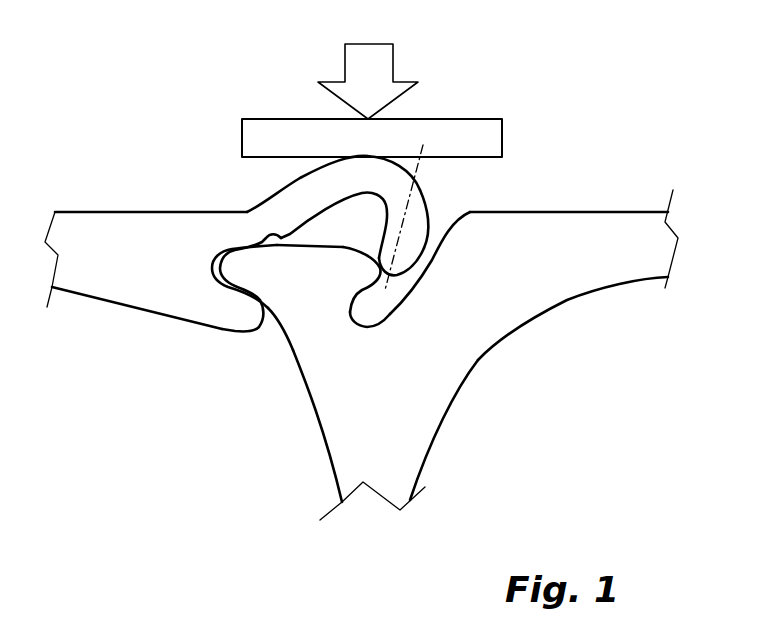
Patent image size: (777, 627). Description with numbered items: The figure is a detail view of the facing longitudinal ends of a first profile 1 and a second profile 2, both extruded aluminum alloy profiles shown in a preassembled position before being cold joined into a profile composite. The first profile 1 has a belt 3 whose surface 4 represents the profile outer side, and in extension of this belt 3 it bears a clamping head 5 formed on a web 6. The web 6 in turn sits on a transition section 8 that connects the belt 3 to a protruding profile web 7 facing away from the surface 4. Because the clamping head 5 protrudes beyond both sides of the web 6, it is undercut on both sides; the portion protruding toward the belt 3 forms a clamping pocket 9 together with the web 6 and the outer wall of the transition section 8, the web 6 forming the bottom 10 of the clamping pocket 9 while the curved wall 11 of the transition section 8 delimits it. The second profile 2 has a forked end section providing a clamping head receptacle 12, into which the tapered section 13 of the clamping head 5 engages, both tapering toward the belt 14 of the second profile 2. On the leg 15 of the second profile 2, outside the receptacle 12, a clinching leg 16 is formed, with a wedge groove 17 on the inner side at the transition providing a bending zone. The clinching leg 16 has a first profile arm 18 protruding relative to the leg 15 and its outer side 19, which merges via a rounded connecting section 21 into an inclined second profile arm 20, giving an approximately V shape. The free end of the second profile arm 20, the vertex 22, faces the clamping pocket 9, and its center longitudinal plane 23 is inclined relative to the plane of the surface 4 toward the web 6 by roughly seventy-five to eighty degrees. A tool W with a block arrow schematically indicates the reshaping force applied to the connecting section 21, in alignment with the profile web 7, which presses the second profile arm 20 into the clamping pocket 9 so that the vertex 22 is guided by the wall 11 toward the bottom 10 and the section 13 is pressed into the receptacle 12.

The first profile 1 is at (545, 178).
The second profile 2 is at (187, 192).
The belt 3 is at (640, 256).
The surface 4 is at (598, 212).
The clamping head 5 is at (299, 286).
The web 6 is at (320, 352).
The profile web 7 is at (379, 491).
The transition section 8 is at (442, 341).
The clamping pocket 9 is at (368, 314).
The bottom 10 is at (362, 317).
The wall 11 is at (413, 287).
The clamping head receptacle 12 is at (220, 282).
The section 13 is at (245, 262).
The belt 14 is at (103, 272).
The leg 15 is at (235, 223).
The clinching leg 16 is at (430, 178).
The wedge groove 17 is at (277, 247).
The first profile arm 18 is at (302, 187).
The outer side 19 is at (115, 212).
The second profile arm 20 is at (420, 232).
The connecting section 21 is at (388, 180).
The vertex 22 is at (397, 278).
The center longitudinal plane 23 is at (372, 138).
The tool W is at (503, 130).